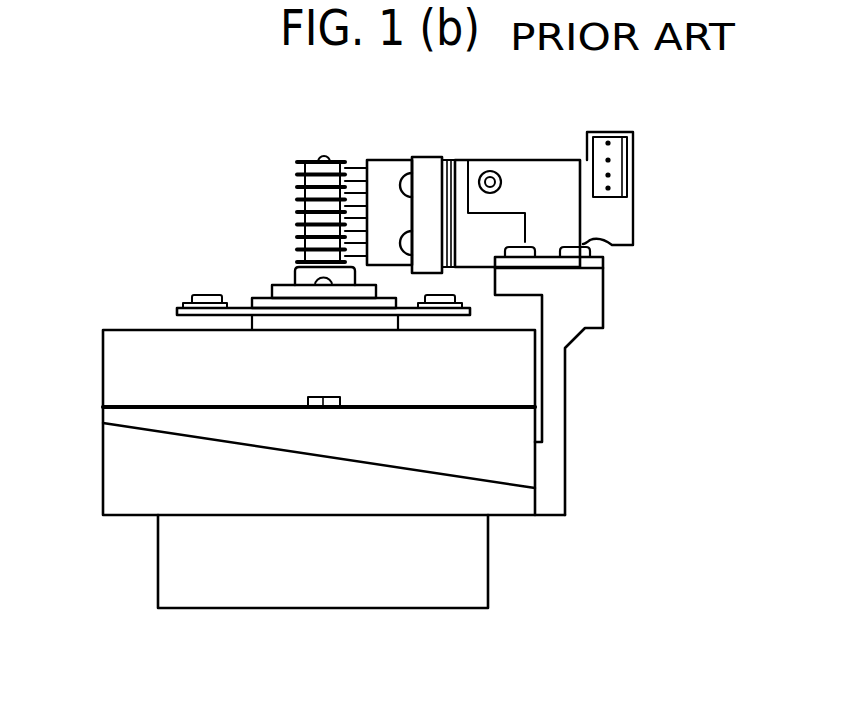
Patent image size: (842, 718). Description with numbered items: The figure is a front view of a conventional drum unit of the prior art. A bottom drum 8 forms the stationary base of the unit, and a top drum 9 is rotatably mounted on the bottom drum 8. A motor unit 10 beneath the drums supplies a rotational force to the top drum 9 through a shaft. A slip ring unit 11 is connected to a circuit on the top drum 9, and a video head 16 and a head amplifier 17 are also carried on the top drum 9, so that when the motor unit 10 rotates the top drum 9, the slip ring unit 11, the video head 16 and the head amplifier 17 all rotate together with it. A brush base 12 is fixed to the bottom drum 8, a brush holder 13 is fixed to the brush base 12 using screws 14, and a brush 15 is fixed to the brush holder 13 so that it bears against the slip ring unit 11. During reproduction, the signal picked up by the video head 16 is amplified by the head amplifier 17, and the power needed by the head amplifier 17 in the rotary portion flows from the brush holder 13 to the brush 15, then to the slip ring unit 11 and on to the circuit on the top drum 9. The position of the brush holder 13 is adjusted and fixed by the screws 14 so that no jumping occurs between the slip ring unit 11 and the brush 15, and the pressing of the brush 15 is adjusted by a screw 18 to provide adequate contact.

The bottom drum 8 is at (130, 502).
The top drum 9 is at (132, 340).
The motor unit 10 is at (197, 590).
The slip ring unit 11 is at (315, 162).
The brush base 12 is at (587, 310).
The brush holder 13 is at (527, 168).
The screws 14 is at (610, 245).
The brush 15 is at (352, 163).
The video head 16 is at (337, 407).
The head amplifier 17 is at (188, 300).
The screw 18 is at (487, 168).